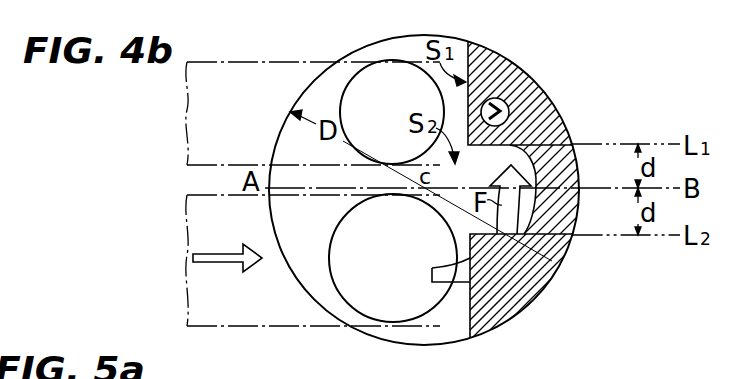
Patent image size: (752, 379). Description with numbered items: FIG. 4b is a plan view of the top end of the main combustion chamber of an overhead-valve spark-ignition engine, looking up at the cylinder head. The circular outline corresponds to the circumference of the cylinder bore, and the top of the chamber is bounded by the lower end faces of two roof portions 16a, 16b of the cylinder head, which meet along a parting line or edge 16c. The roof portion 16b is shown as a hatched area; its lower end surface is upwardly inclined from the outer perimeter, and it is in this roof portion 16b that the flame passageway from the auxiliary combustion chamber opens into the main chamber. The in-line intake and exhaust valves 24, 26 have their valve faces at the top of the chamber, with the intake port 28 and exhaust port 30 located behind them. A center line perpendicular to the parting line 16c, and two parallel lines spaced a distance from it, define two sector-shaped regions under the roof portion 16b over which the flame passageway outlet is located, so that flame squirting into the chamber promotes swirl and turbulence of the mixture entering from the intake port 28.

The exhaust port 30 is at (229, 67).
The exhaust valve 26 is at (372, 77).
The intake port 28 is at (308, 326).
The intake valve 24 is at (397, 318).
The roof portion 16a is at (326, 245).
The roof portion 16b is at (518, 305).
The parting line 16c is at (466, 320).